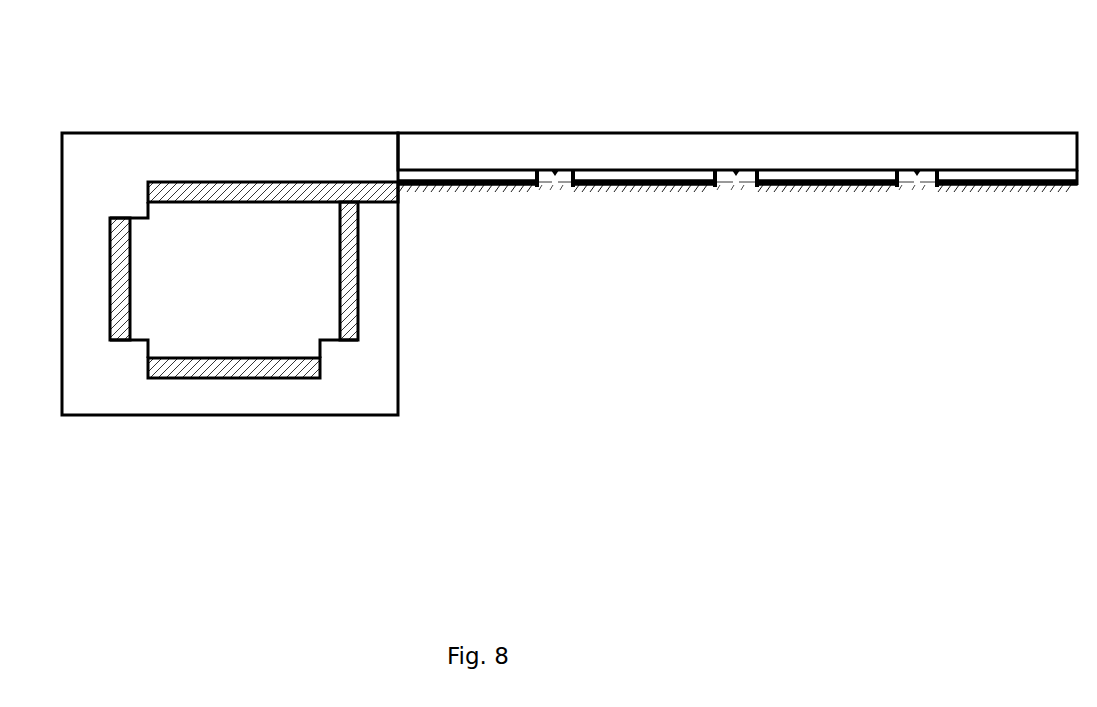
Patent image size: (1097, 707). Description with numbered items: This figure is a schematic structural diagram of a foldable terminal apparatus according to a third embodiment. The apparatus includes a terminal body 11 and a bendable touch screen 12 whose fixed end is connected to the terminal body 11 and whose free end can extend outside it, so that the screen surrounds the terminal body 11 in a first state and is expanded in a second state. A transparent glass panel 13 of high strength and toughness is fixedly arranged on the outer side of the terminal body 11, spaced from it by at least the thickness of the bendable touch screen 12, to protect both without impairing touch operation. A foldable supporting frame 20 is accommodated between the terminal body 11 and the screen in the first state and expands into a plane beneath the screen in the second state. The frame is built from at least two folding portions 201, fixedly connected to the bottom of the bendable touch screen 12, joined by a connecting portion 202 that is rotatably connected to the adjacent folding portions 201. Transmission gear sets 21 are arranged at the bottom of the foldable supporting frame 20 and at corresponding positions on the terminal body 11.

The terminal body 11 is at (297, 343).
The bendable touch screen 12 is at (707, 155).
The glass panel 13 is at (156, 132).
The foldable supporting frame 20 is at (722, 187).
The transmission gear set 21 is at (442, 185).
The folding portion 201 is at (627, 187).
The connecting portion 202 is at (567, 184).